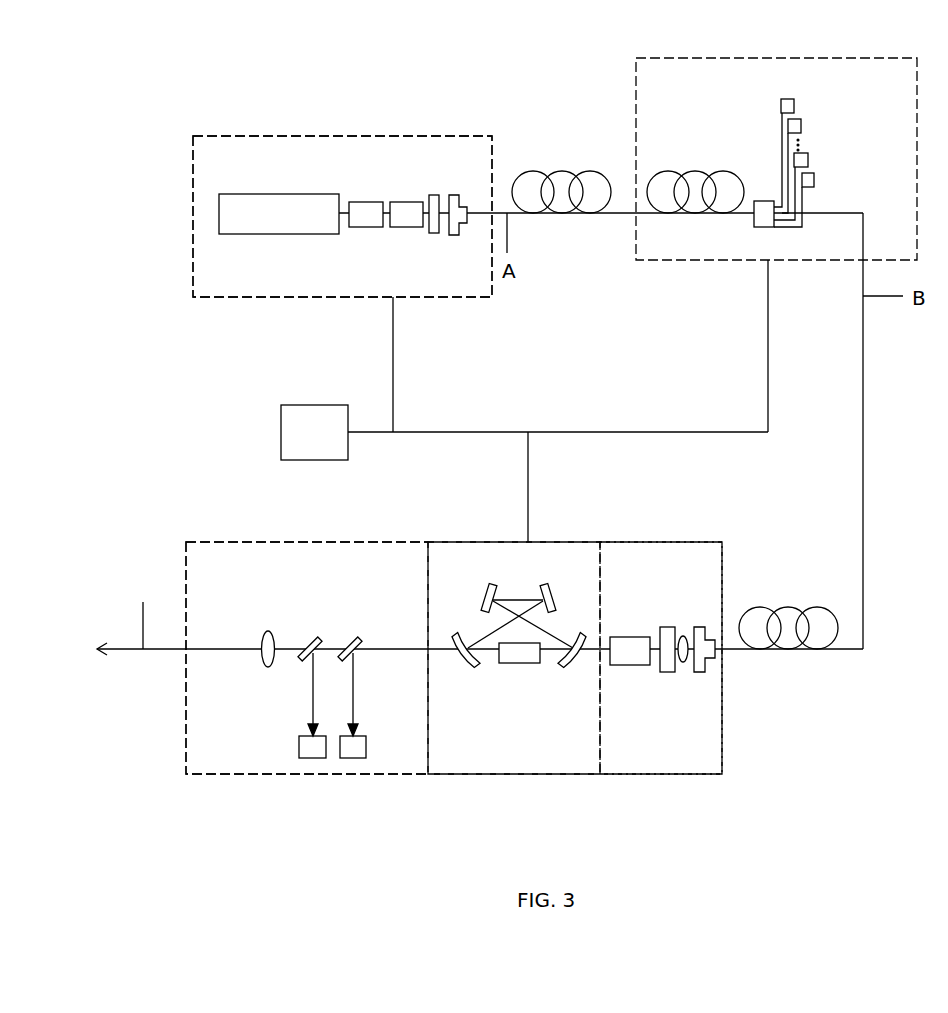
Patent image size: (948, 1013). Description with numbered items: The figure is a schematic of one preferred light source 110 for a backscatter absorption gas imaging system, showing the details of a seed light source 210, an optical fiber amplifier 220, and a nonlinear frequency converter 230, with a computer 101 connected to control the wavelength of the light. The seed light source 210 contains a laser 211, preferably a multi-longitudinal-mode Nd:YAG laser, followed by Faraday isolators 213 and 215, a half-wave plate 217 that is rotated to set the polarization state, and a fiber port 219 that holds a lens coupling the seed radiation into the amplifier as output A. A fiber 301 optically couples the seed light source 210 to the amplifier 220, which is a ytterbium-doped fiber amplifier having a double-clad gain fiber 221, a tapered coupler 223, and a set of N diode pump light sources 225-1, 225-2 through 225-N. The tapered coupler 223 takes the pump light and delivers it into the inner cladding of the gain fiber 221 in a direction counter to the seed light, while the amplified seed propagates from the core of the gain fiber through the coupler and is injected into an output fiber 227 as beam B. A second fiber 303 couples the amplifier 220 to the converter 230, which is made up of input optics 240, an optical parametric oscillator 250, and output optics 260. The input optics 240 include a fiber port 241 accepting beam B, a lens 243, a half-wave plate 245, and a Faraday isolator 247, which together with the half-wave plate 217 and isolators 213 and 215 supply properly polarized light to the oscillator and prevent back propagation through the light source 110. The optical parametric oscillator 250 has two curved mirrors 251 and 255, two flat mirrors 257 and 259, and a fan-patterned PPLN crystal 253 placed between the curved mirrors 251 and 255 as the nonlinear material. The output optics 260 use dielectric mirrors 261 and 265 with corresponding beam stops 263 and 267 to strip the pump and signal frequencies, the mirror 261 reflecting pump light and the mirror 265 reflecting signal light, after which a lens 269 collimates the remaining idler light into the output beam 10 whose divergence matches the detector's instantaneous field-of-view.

The beam 10 is at (142, 611).
The computer 101 is at (282, 419).
The light source 110 is at (368, 84).
The seed light source 210 is at (266, 115).
The laser 211 is at (267, 234).
The Faraday isolator 213 is at (367, 227).
The Faraday isolator 215 is at (401, 202).
The half-wave plate 217 is at (434, 233).
The fiber port 219 is at (453, 195).
The optical fiber amplifier 220 is at (709, 45).
The gain fiber 221 is at (697, 171).
The tapered coupler 223 is at (754, 226).
The pump light source 225-1 is at (796, 103).
The pump light source 225-2 is at (803, 123).
The pump light source 225-N is at (815, 177).
The output fiber 227 is at (808, 217).
The nonlinear frequency converter 230 is at (667, 800).
The input optics 240 is at (643, 771).
The fiber port 241 is at (699, 627).
The lens 243 is at (683, 661).
The half-wave plate 245 is at (672, 627).
The Faraday isolator 247 is at (645, 666).
The optical parametric oscillator 250 is at (475, 771).
The curved mirror 251 is at (573, 666).
The PPLN crystal 253 is at (531, 663).
The curved mirror 255 is at (468, 667).
The flat mirror 257 is at (552, 590).
The flat mirror 259 is at (484, 590).
The output optics 260 is at (236, 767).
The dielectric mirror 261 is at (356, 642).
The beam stop 263 is at (366, 740).
The dielectric mirror 265 is at (303, 642).
The beam stop 267 is at (299, 748).
The lens 269 is at (261, 645).
The fiber 301 is at (562, 171).
The fiber 303 is at (773, 652).